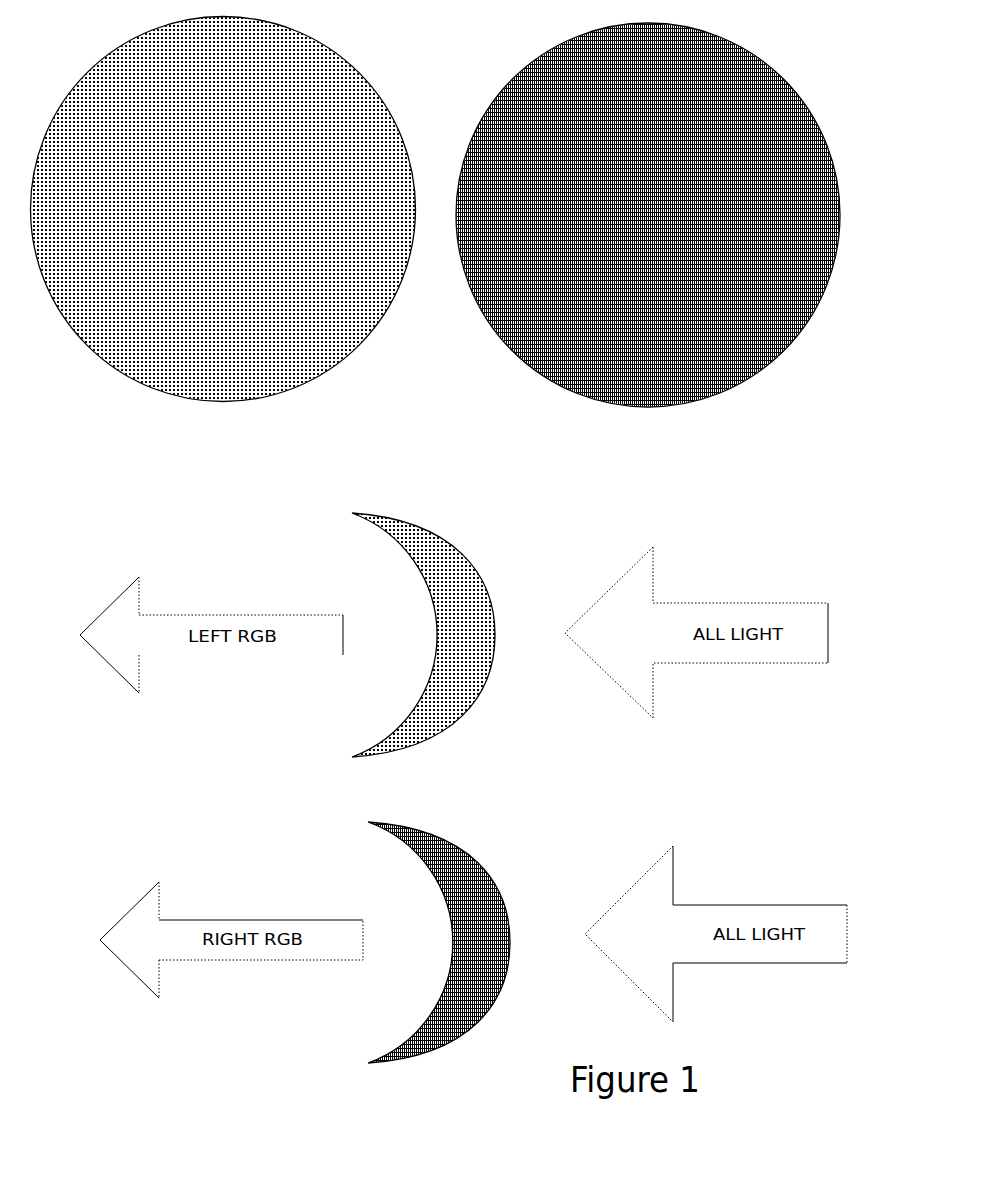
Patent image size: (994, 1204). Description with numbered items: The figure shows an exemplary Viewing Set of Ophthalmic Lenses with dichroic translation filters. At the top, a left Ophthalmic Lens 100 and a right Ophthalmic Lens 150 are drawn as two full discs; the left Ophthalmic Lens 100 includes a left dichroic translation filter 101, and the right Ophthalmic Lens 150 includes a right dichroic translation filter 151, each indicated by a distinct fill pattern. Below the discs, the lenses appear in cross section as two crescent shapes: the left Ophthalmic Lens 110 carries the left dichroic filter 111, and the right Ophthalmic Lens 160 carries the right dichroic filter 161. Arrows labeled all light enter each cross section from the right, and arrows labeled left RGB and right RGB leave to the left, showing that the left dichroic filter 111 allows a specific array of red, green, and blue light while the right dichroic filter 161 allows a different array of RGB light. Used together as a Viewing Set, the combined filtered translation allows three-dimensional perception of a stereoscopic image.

The left Ophthalmic Lens 100 is at (223, 234).
The left dichroic translation filter 101 is at (202, 360).
The right Ophthalmic Lens 150 is at (648, 239).
The right dichroic translation filter 151 is at (480, 330).
The left Ophthalmic Lens 110 is at (408, 635).
The left dichroic filter 111 is at (470, 623).
The right Ophthalmic Lens 160 is at (418, 942).
The right dichroic filter 161 is at (483, 893).